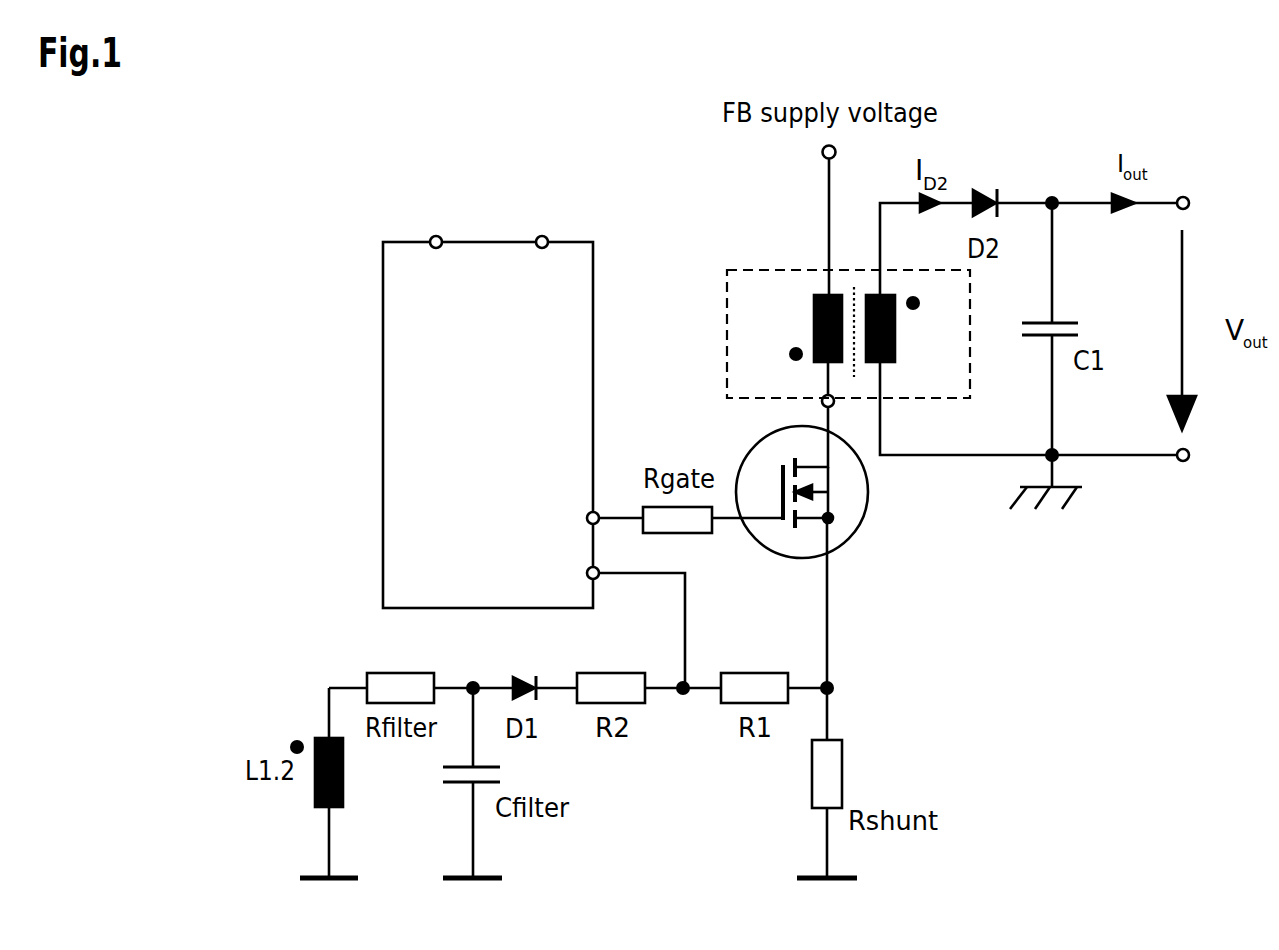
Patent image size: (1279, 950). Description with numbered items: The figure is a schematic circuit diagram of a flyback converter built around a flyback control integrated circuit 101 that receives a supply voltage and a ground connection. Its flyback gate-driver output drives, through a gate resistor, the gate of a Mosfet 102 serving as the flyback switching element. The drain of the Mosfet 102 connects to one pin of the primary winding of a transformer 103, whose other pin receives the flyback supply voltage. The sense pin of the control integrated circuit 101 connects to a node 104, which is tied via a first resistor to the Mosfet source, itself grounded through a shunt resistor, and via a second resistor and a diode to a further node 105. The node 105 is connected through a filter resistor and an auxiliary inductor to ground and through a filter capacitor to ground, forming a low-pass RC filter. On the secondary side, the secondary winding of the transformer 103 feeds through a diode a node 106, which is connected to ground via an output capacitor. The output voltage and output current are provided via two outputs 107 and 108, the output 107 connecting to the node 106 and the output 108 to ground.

The FB control integrated circuit 101 is at (390, 432).
The Mosfet 102 is at (848, 518).
The transformer 103 is at (727, 303).
The node 104 is at (680, 707).
The node 105 is at (472, 671).
The node 106 is at (1049, 185).
The output 107 is at (1209, 204).
The output 108 is at (1209, 457).